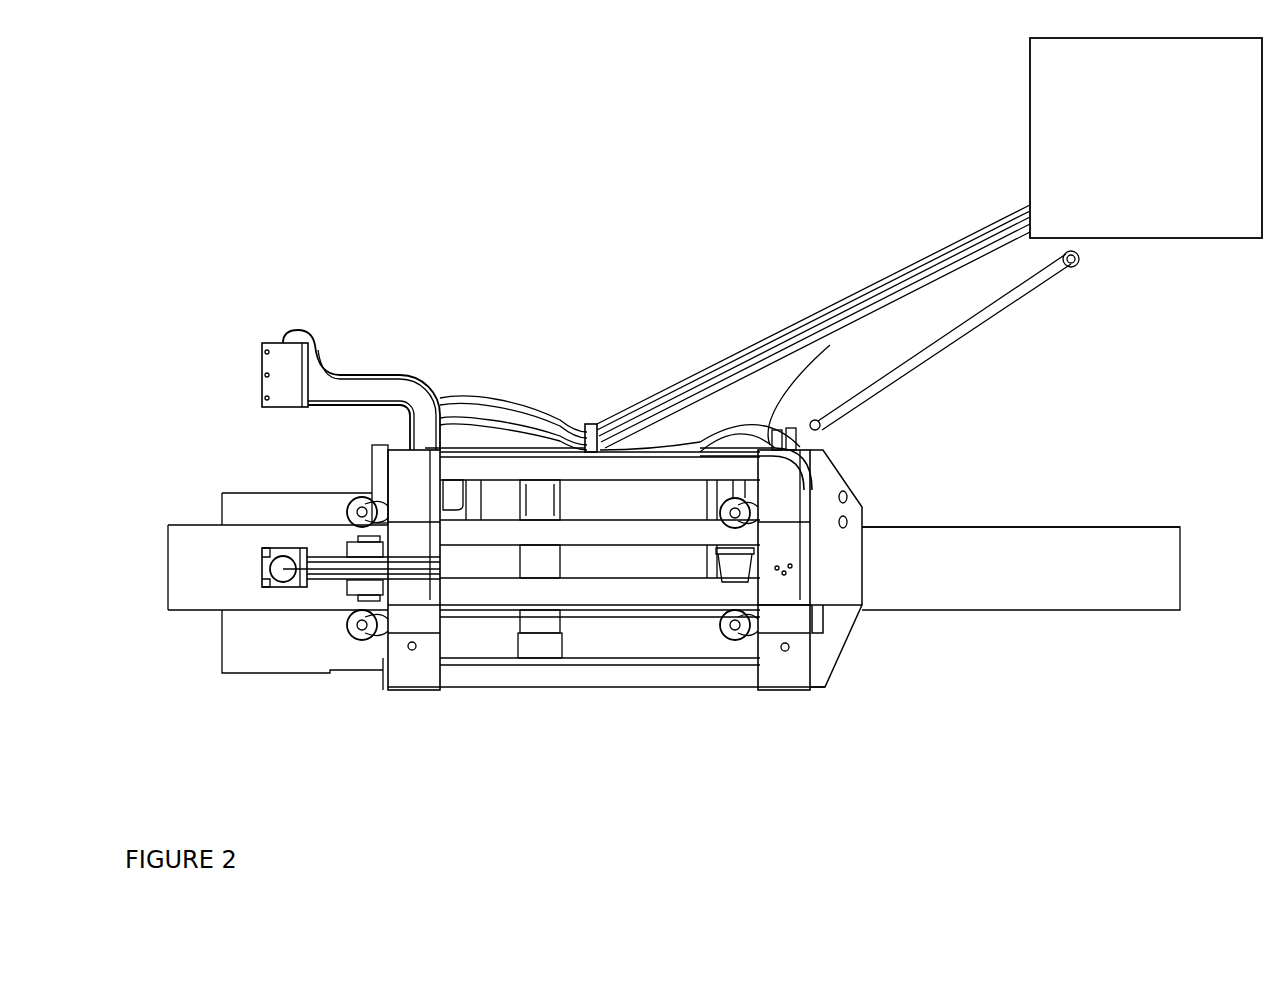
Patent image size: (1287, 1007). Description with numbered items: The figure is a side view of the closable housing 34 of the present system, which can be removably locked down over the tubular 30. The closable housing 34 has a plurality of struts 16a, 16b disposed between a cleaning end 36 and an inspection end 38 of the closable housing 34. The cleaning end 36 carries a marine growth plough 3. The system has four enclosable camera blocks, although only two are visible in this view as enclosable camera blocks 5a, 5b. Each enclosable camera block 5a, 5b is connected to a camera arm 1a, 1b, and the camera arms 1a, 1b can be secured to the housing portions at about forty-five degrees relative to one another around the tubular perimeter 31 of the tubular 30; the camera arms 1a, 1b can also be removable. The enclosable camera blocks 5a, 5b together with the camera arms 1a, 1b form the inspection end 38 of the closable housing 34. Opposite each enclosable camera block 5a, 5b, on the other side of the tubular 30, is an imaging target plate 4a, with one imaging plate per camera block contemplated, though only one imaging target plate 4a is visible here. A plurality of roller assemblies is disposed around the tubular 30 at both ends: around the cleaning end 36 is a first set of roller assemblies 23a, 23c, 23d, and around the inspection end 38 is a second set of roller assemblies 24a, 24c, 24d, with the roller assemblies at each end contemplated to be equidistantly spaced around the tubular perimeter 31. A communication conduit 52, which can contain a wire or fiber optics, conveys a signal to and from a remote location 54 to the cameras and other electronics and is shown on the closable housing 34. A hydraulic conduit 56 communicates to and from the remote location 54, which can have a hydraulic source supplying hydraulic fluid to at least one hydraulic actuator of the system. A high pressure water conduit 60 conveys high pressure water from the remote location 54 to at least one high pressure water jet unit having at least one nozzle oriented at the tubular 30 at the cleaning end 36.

The remote location 54 is at (1090, 102).
The inspection end 38 is at (307, 250).
The cleaning end 36 is at (741, 242).
The communication conduit 52 is at (730, 358).
The hydraulic conduit 56 is at (640, 400).
The high pressure water conduit 60 is at (800, 375).
The camera arm 1a is at (398, 378).
The enclosable camera block 5a is at (262, 357).
The roller assembly 24a is at (348, 503).
The roller assembly 24d is at (352, 548).
The roller assembly 24c is at (290, 558).
The enclosable camera block 5b is at (275, 592).
The imaging target plate 4a is at (295, 650).
The camera arm 1b is at (296, 582).
The marine growth plough 3 is at (852, 490).
The tubular perimeter 31 is at (1060, 527).
The tubular 30 is at (1025, 583).
The roller assembly 23a is at (750, 520).
The roller assembly 23d is at (742, 570).
The roller assembly 23c is at (752, 636).
The strut 16a is at (583, 687).
The strut 16b is at (460, 605).
The closable housing 34 is at (850, 742).